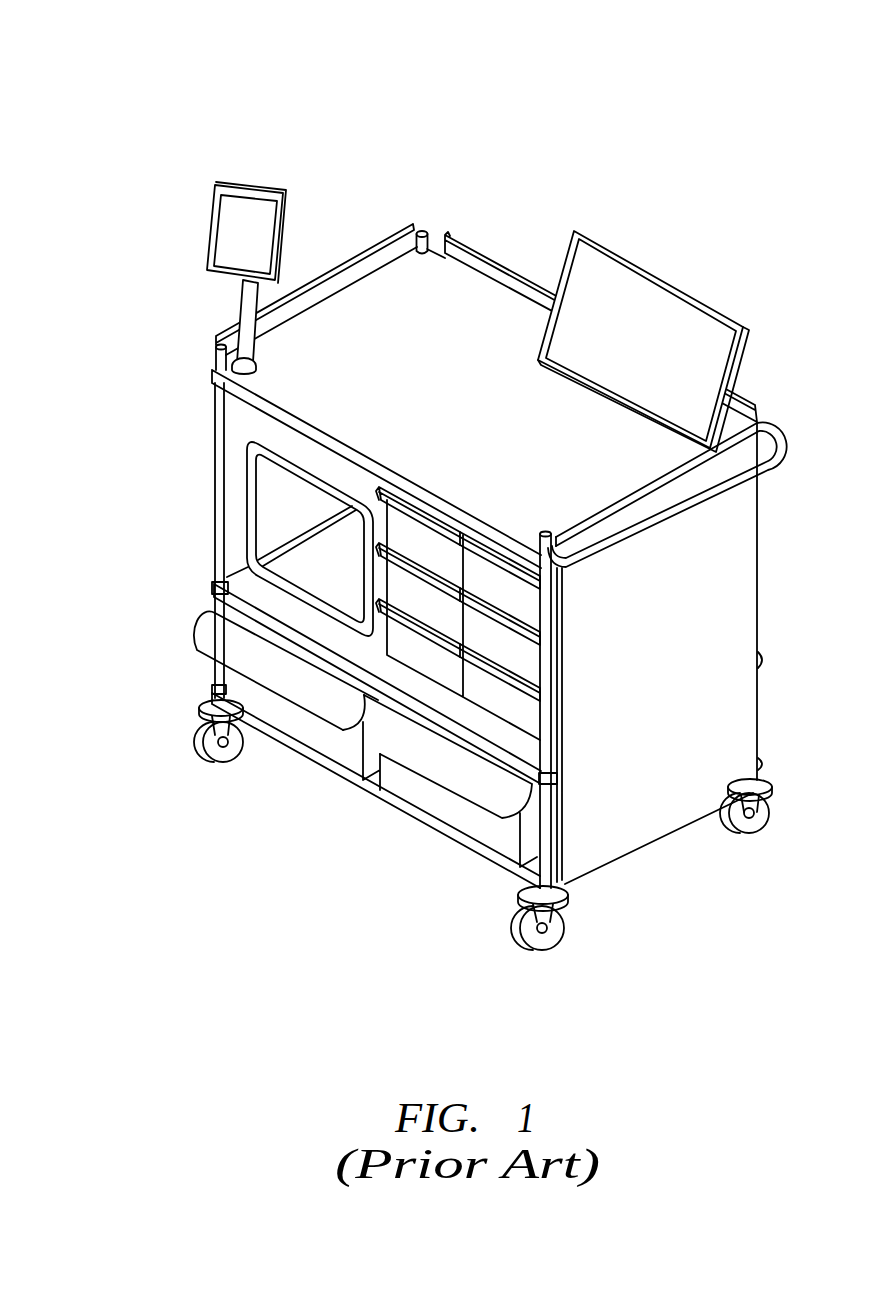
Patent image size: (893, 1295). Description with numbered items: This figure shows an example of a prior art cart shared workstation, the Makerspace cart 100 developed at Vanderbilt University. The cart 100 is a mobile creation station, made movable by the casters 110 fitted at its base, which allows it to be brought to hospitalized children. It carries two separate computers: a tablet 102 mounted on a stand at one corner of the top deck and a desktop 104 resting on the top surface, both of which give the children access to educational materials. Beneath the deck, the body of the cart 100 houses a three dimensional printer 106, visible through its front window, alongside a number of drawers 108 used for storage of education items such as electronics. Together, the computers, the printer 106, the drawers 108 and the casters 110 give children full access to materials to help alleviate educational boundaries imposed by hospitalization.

The Makerspace cart 100 is at (176, 38).
The tablet 102 is at (212, 228).
The desktop 104 is at (645, 267).
The three dimensional (3D) printer 106 is at (242, 485).
The drawers 108 is at (435, 772).
The casters 110 is at (198, 747).